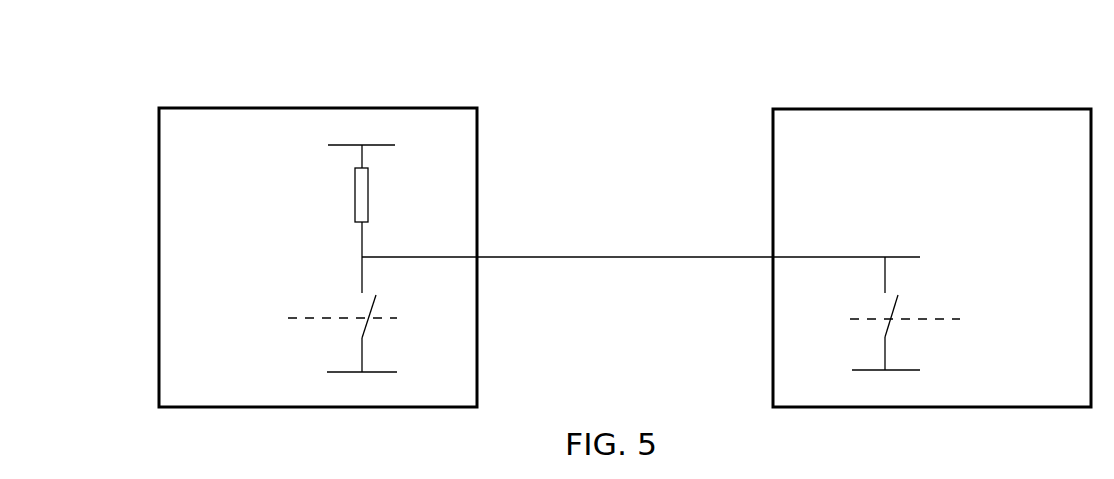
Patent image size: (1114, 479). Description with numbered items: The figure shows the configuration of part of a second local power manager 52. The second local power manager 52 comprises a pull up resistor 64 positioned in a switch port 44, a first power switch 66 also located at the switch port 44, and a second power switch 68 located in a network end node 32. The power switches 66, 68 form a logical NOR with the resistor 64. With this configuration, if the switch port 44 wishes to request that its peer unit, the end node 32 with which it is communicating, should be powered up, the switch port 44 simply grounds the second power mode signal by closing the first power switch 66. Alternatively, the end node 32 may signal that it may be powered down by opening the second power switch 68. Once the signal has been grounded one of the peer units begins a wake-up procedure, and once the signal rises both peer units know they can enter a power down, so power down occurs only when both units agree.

The second local power manager 52 is at (185, 62).
The switch port 44 is at (159, 172).
The pull up resistor 64 is at (358, 193).
The first power switch 66 is at (378, 307).
The network end node 32 is at (913, 108).
The second power switch 68 is at (885, 325).